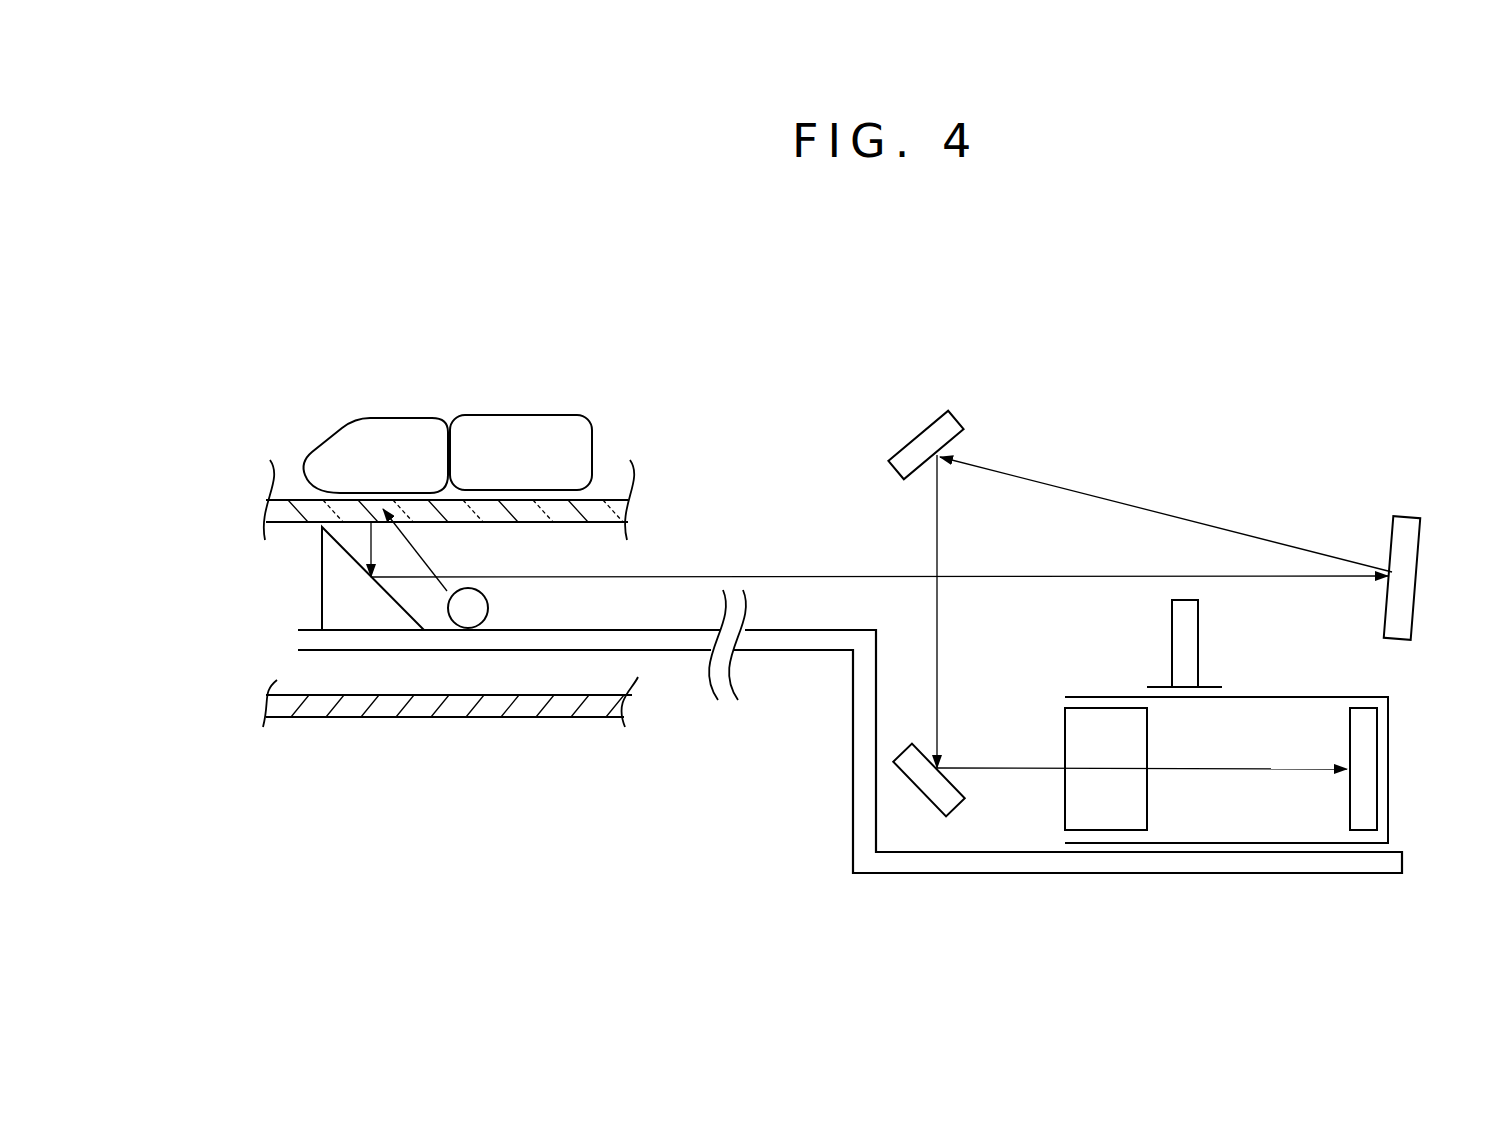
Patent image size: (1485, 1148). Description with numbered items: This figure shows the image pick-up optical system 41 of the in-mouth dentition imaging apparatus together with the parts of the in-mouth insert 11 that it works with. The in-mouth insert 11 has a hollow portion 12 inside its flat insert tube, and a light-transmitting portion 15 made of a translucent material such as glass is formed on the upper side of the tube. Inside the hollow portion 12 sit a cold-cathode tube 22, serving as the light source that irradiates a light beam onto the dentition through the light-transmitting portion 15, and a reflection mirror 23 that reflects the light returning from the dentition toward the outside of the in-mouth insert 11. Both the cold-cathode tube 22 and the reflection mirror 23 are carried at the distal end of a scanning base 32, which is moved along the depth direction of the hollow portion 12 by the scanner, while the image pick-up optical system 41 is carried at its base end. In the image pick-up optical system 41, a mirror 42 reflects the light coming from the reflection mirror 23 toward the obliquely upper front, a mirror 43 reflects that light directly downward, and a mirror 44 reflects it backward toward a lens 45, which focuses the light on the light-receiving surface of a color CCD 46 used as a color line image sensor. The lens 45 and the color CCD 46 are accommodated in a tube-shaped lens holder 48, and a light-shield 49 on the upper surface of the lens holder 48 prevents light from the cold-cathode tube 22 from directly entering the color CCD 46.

The in-mouth insert 11 is at (350, 708).
The hollow portion 12 is at (258, 655).
The light-transmitting portion 15 is at (602, 500).
The cold-cathode tube 22 is at (489, 609).
The reflection mirror 23 is at (328, 572).
The scanning base 32 is at (902, 865).
The image pick-up optical system 41 is at (1198, 438).
The mirror 42 is at (1407, 517).
The mirror 43 is at (918, 433).
The mirror 44 is at (910, 787).
The lens 45 is at (1065, 797).
The color CCD 46 is at (1378, 795).
The lens holder 48 is at (1390, 705).
The light-shield 49 is at (1198, 635).